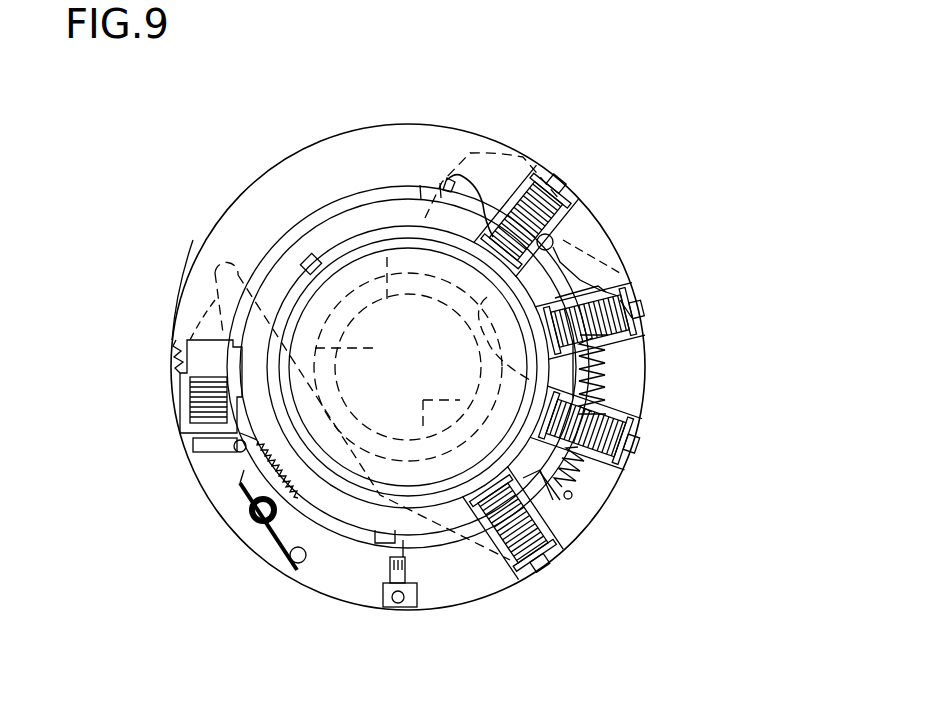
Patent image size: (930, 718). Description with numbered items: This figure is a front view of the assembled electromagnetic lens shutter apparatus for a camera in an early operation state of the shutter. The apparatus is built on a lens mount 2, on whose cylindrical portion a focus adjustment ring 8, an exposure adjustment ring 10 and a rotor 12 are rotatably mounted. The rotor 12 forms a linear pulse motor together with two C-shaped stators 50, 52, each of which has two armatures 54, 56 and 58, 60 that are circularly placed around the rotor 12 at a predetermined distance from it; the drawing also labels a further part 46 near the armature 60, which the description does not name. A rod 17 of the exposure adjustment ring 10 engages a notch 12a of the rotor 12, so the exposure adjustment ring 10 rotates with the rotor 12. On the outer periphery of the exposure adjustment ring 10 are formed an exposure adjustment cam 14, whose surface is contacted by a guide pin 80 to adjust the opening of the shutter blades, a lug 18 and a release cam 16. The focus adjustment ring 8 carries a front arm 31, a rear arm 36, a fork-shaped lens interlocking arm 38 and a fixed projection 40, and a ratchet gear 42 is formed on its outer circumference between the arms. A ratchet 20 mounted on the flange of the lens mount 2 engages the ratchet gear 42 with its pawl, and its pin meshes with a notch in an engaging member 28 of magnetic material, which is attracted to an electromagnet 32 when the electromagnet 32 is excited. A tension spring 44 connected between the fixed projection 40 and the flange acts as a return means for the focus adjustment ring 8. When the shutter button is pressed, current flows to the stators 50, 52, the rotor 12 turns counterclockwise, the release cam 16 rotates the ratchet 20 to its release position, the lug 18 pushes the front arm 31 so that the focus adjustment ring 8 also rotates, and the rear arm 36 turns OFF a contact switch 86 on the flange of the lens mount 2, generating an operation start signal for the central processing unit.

The lens mount 2 is at (437, 614).
The focus adjustment ring 8 is at (258, 260).
The exposure adjustment ring 10 is at (358, 208).
The rotor 12 is at (455, 510).
The notch 12a is at (320, 255).
The exposure adjustment cam 14 is at (490, 150).
The release cam 16 is at (190, 412).
The rod 17 is at (313, 263).
The lug 18 is at (448, 180).
The ratchet 20 is at (222, 462).
The engaging member 28 is at (193, 441).
The front arm 31 is at (437, 183).
The electromagnet 32 is at (190, 388).
The rear arm 36 is at (380, 545).
The lens interlocking arm 38 is at (178, 342).
The fixed projection 40 is at (604, 290).
The ratchet gear 42 is at (250, 470).
The tension spring 44 is at (614, 372).
The bracket 46 is at (527, 482).
The stator 50 is at (598, 244).
The stator 52 is at (588, 507).
The armature 54 is at (541, 210).
The armature 56 is at (630, 315).
The armature 58 is at (616, 447).
The armature 60 is at (527, 546).
The guide pin 80 is at (552, 238).
The contact switch 86 is at (398, 608).